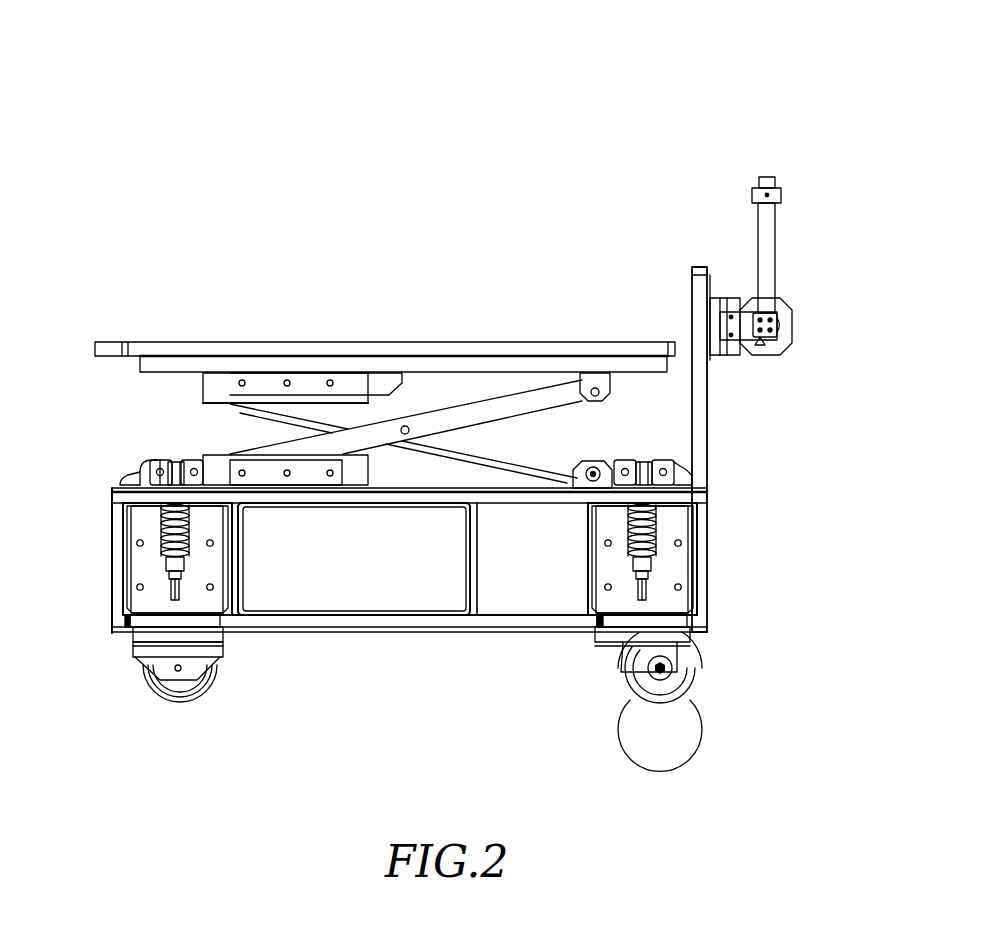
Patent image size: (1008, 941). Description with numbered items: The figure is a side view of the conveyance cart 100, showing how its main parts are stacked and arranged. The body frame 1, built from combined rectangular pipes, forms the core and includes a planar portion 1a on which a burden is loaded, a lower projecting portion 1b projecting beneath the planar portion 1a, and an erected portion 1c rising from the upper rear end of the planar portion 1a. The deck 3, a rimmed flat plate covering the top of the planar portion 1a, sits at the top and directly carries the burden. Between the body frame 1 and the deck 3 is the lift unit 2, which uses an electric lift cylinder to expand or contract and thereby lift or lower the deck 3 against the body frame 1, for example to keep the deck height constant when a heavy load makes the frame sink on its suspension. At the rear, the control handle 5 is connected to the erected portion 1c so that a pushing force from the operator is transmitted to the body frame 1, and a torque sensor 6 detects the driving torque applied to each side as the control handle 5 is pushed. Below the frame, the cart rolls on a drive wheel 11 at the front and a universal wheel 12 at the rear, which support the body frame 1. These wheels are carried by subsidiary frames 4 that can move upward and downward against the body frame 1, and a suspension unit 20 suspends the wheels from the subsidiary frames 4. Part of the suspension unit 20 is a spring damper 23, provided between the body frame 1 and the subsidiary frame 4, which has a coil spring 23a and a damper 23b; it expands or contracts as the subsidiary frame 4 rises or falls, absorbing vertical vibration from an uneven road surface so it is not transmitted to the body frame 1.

The conveyance cart 100 is at (787, 91).
The body frame 1 is at (714, 594).
The planar portion 1a is at (698, 497).
The lower projecting portion 1b is at (700, 575).
The erected portion 1c is at (698, 429).
The lift unit 2 is at (427, 400).
The deck 3 is at (148, 340).
The subsidiary frame 4 is at (200, 593).
The control handle 5 is at (771, 184).
The torque sensor 6 is at (786, 327).
The drive wheel 11 is at (176, 698).
The universal wheel 12 is at (656, 705).
The suspension unit 20 is at (122, 637).
The spring damper 23 is at (161, 578).
The coil spring 23a is at (189, 540).
The damper 23b is at (181, 565).